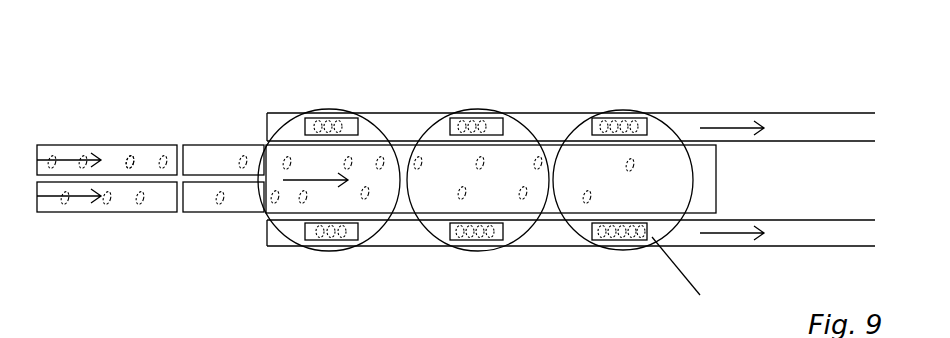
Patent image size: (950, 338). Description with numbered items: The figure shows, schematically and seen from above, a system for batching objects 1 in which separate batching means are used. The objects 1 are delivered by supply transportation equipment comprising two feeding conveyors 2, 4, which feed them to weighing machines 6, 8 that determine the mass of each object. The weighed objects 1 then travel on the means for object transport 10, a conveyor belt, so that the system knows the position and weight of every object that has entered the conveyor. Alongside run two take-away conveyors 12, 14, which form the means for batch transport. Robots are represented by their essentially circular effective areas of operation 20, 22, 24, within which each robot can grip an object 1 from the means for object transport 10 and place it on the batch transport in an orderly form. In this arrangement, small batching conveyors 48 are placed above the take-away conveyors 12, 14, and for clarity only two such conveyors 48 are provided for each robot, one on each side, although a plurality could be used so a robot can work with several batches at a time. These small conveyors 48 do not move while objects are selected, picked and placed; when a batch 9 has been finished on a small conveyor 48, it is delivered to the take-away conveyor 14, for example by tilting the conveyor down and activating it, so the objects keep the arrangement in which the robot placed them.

The objects 1 is at (133, 154).
The feeding conveyor 2 is at (88, 146).
The feeding conveyor 4 is at (108, 212).
The weighing machine 6 is at (212, 146).
The weighing machine 8 is at (197, 213).
The batch 9 is at (654, 244).
The means for object transport 10 is at (402, 145).
The take-away conveyor 12 is at (552, 113).
The take-away conveyor 14 is at (543, 247).
The effective area of operation 20 is at (325, 108).
The effective area of operation 22 is at (468, 110).
The third separation stage 24 is at (628, 110).
The small batching conveyor 48 is at (347, 118).